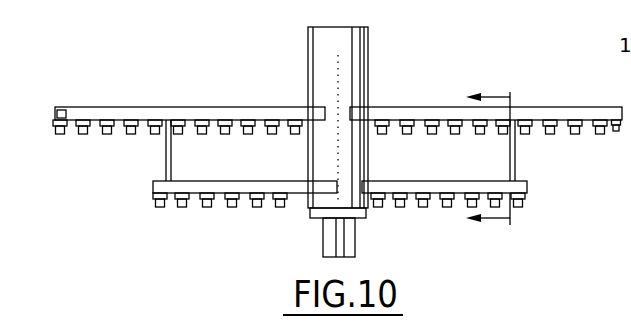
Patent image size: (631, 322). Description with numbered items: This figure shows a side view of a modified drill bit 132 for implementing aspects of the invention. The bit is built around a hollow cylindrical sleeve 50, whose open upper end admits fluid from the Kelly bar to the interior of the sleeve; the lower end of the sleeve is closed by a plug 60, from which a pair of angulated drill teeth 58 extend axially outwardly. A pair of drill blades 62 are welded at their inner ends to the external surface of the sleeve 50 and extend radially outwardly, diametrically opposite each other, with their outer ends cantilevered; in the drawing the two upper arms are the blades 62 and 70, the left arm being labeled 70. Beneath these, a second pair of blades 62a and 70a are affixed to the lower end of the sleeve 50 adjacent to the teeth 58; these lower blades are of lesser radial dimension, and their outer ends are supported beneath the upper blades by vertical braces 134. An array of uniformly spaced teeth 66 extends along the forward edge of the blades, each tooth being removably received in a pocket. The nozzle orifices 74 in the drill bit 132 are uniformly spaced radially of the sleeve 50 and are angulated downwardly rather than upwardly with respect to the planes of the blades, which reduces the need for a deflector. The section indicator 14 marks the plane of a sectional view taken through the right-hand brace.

The modified drill bit 132 is at (266, 56).
The hollow cylindrical sleeve 50 is at (368, 41).
The plug 60 is at (368, 220).
The angulated drill teeth 58 is at (338, 236).
The upper left distribution arm 70 is at (118, 107).
The drill blades 62 is at (546, 107).
The lower left distribution arm 70a is at (153, 182).
The second pair of blades 62a is at (438, 172).
The nozzle orifices 74 is at (120, 122).
The teeth 66 is at (599, 135).
The vertical braces 134 is at (173, 166).
The section line 14- 14 is at (488, 160).